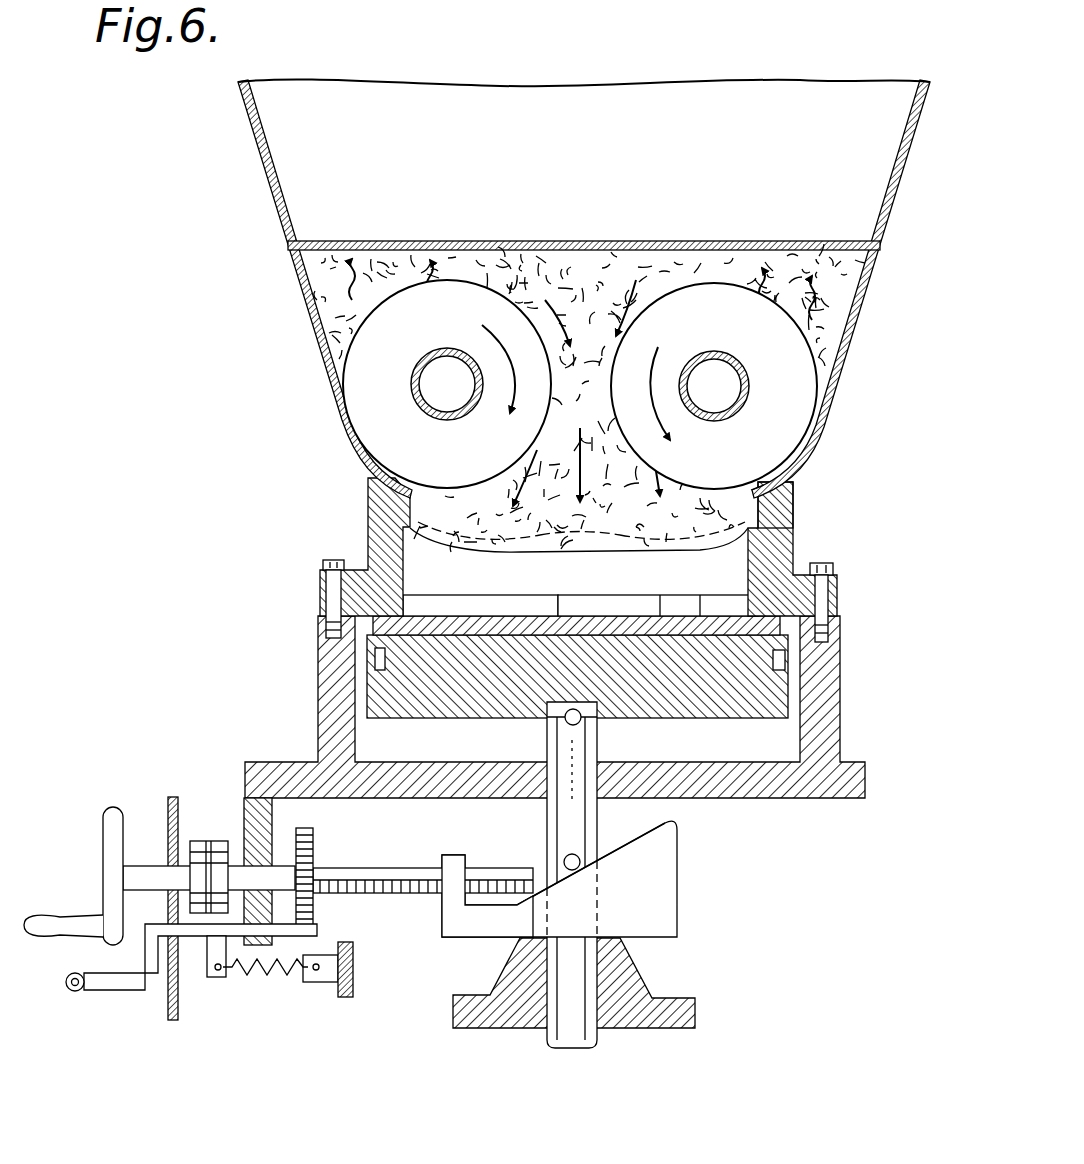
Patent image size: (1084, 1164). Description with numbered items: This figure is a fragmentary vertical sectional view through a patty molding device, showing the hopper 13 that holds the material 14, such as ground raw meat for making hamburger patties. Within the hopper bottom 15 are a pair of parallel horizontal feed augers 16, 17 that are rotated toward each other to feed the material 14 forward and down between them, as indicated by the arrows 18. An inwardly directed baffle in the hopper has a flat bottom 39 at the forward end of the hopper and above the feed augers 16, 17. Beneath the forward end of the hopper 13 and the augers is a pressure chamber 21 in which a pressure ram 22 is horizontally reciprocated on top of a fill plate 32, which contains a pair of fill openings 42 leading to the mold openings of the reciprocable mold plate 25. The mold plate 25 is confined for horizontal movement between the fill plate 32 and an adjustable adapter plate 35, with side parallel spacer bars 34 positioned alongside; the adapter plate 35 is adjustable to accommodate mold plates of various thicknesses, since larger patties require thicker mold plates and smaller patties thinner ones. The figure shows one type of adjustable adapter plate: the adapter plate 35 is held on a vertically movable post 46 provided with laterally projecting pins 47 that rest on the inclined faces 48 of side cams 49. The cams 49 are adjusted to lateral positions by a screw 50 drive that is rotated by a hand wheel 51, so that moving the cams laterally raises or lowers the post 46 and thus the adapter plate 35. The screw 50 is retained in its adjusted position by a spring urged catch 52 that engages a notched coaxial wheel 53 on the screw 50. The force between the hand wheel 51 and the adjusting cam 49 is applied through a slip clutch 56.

The hopper 13 is at (262, 166).
The material 14 is at (547, 252).
The hopper bottom 15 is at (793, 498).
The feed auger 16 is at (398, 298).
The feed auger 17 is at (770, 305).
The arrows 18 is at (600, 340).
The pressure chamber 21 is at (372, 510).
The pressure ram 22 is at (553, 584).
The mold plate 25 is at (463, 618).
The fill plate 32 is at (678, 607).
The side parallel spacer bars 34 is at (378, 640).
The adapter plate 35 is at (672, 708).
The flat bottom 39 is at (340, 242).
The fill openings 42 is at (580, 605).
The vertically movable post 46 is at (580, 818).
The laterally projecting pins 47 is at (564, 860).
The inclined faces 48 is at (615, 842).
The side cams 49 is at (655, 912).
The screw 50 is at (402, 870).
The hand wheel 51 is at (110, 894).
The spring urged catch 52 is at (320, 926).
The notched coaxial wheel 53 is at (308, 830).
The slip clutch 56 is at (213, 834).